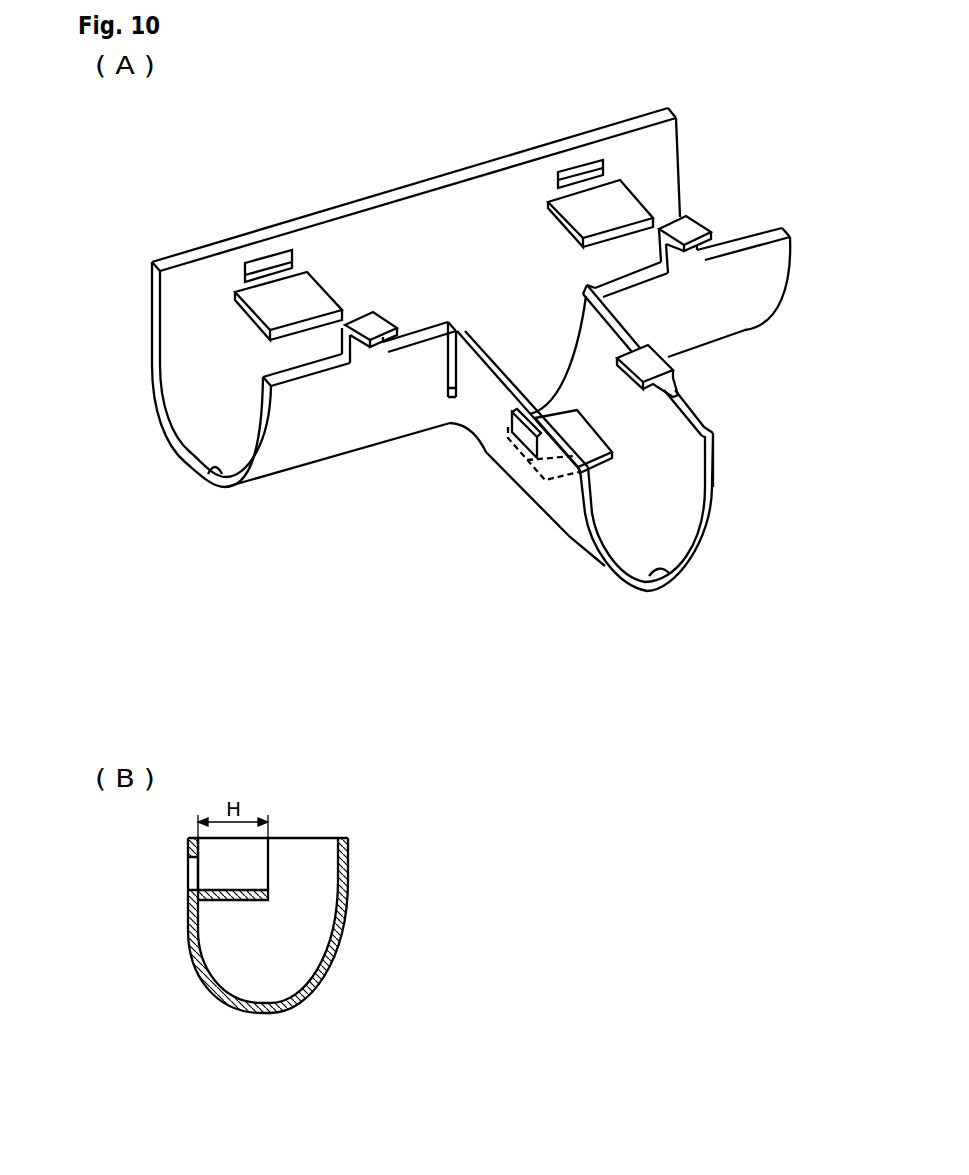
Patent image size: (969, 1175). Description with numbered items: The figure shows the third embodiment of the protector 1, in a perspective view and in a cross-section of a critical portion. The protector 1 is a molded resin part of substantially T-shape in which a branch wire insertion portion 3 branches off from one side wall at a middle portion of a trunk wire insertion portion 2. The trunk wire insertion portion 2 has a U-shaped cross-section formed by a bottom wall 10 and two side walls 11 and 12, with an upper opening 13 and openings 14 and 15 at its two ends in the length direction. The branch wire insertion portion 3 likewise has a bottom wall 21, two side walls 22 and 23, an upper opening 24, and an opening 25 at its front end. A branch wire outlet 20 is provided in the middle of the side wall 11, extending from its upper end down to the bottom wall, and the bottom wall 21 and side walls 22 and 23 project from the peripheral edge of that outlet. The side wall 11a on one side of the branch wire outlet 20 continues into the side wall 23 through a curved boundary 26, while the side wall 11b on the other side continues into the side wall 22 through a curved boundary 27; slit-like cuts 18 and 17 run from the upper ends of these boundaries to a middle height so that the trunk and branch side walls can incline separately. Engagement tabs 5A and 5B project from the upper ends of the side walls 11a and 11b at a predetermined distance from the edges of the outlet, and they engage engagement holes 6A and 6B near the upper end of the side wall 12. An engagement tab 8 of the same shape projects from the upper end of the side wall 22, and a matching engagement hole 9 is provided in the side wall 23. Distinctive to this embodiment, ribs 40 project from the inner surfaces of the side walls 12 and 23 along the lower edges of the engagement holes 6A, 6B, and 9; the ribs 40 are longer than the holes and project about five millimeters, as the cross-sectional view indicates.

The protector 1 is at (272, 133).
The trunk wire insertion portion 2 is at (187, 478).
The branch wire insertion portion 3 is at (523, 495).
The engagement tab 5A is at (327, 348).
The engagement tab 5B is at (694, 232).
The engagement hole 6A is at (273, 263).
The engagement hole 6B is at (580, 172).
The engagement tab 8 is at (673, 388).
The engagement hole 9 is at (512, 435).
The bottom wall 10 is at (233, 490).
The side wall 11 is at (407, 363).
The side wall 11a is at (327, 432).
The side wall 11b is at (743, 308).
The side wall 12 is at (155, 353).
The upper opening 13 is at (507, 230).
The opening 14 is at (195, 403).
The opening 15 is at (667, 180).
The slit-like cut 17 is at (536, 337).
The slit-like cut 18 is at (447, 365).
The branch wire outlet 20 is at (536, 337).
The bottom wall 21 is at (665, 575).
The side wall 22 is at (717, 480).
The side wall 23 is at (558, 493).
The upper opening 24 is at (667, 443).
The opening 25 is at (677, 505).
The curved boundary 26 is at (452, 400).
The curved boundary 27 is at (573, 321).
The rib 40 is at (330, 285).